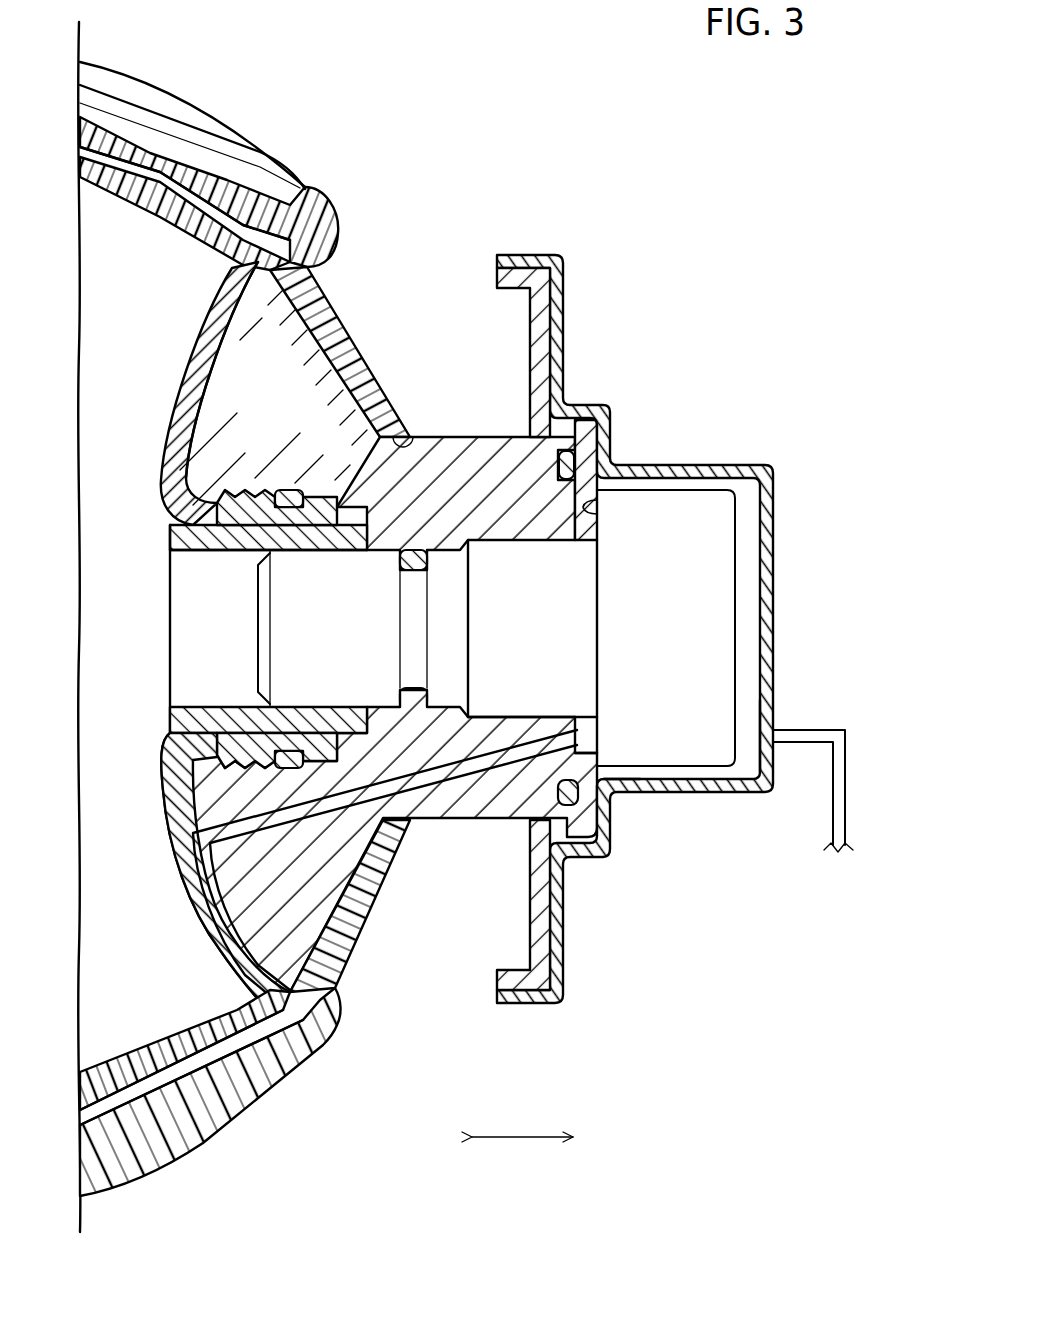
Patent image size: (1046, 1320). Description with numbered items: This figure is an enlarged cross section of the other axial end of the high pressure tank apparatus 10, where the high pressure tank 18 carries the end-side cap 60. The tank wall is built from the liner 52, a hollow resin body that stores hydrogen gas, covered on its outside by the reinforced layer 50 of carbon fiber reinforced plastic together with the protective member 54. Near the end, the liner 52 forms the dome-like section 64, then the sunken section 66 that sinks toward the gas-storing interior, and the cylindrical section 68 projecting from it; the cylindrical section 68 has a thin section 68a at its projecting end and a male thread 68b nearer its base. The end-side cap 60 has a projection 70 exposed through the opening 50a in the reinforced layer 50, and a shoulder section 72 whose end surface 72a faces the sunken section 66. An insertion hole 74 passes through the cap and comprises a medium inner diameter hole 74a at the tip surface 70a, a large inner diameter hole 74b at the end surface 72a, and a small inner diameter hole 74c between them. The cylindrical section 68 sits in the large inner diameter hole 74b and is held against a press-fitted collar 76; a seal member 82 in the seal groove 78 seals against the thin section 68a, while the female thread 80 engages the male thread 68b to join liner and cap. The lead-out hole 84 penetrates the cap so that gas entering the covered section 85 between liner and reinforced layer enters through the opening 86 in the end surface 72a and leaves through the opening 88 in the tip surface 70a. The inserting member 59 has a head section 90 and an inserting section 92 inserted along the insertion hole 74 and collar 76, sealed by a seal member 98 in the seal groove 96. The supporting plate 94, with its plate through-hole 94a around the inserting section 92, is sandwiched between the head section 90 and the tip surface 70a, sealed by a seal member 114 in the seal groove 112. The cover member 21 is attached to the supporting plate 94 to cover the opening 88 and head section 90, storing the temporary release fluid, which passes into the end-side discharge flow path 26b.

The high pressure tank apparatus 10 is at (706, 119).
The high pressure tank 18 is at (224, 1154).
The cover member 21 is at (527, 256).
The end-side discharge flow path 26b is at (833, 808).
The reinforced layer 50 is at (117, 153).
The opening 50a is at (410, 445).
The liner 52 is at (147, 193).
The protective member 54 is at (130, 97).
The inserting member 59 is at (742, 647).
The end-side cap 60 is at (495, 428).
The dome-like section 64 is at (182, 200).
The sunken section 66 is at (203, 360).
The cylindrical section 68 is at (237, 417).
The thin section 68a is at (323, 517).
The male thread 68b is at (245, 493).
The projection 70 is at (473, 437).
The tip surface 70a is at (582, 529).
The shoulder section 72 is at (313, 327).
The end surface 72a is at (235, 324).
The insertion hole 74 is at (547, 716).
The medium inner diameter hole 74a is at (506, 717).
The large inner diameter hole 74b is at (358, 750).
The small inner diameter hole 74c is at (437, 702).
The collar 76 is at (188, 542).
The seal groove 78 is at (297, 760).
The female thread 80 is at (236, 527).
The seal member 82 is at (285, 762).
The lead-out hole 84 is at (195, 888).
The covered section 85 is at (128, 1100).
The opening 86 is at (197, 840).
The opening 88 is at (580, 733).
The head section 90 is at (720, 590).
The inserting section 92 is at (287, 625).
The supporting plate 94 is at (502, 280).
The plate through-hole 94a is at (590, 508).
The seal groove 96 is at (425, 559).
The seal member 98 is at (410, 570).
The seal groove 112 is at (574, 799).
The seal member 114 is at (618, 797).